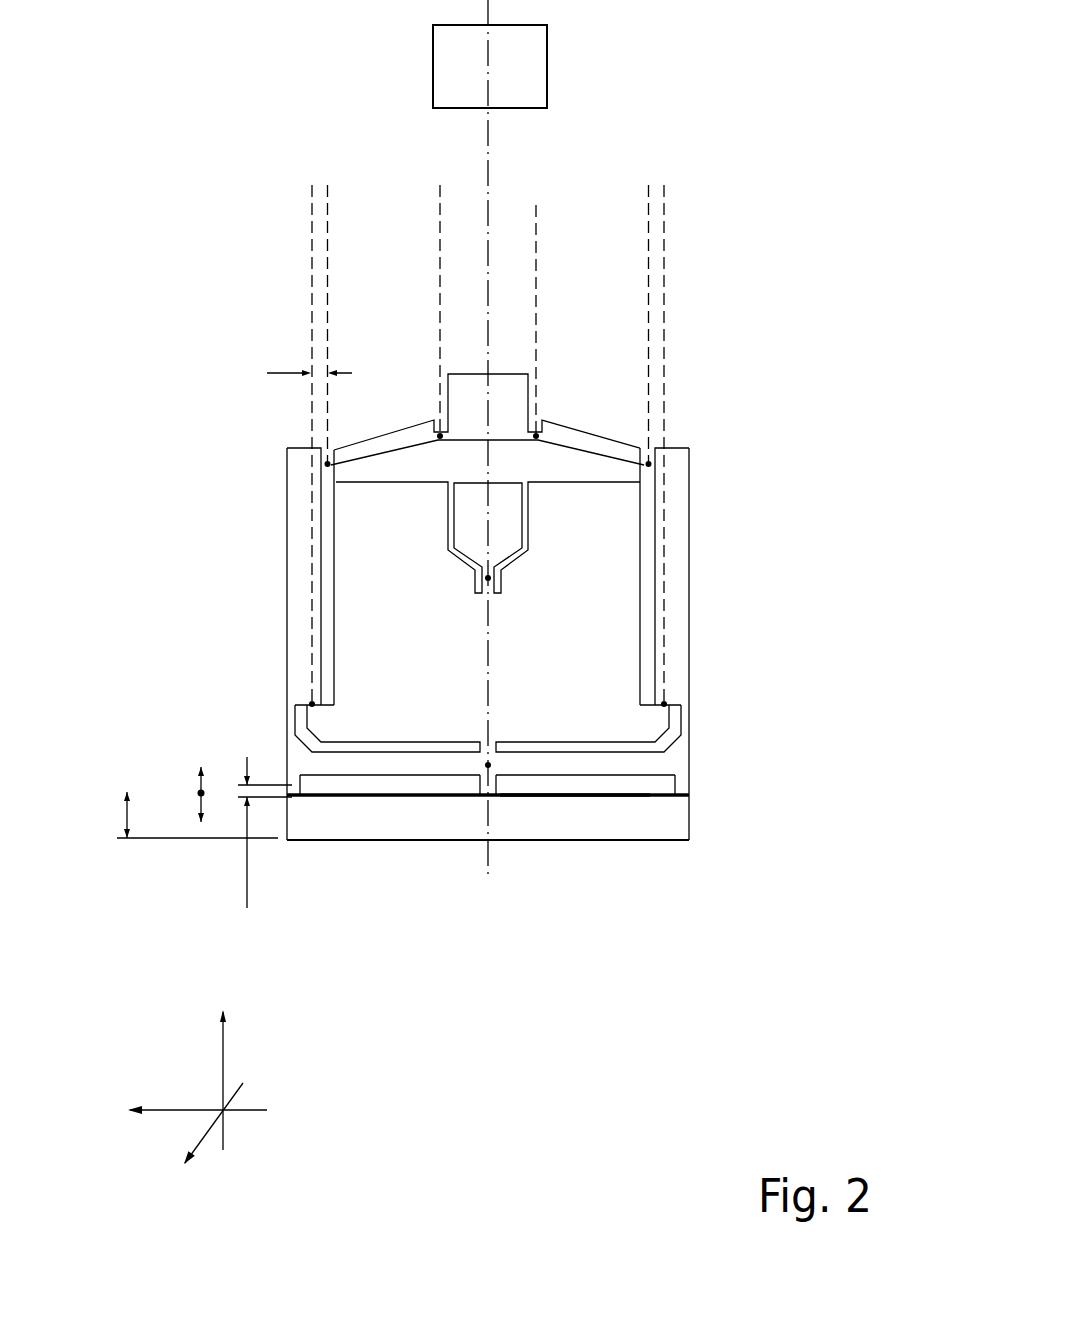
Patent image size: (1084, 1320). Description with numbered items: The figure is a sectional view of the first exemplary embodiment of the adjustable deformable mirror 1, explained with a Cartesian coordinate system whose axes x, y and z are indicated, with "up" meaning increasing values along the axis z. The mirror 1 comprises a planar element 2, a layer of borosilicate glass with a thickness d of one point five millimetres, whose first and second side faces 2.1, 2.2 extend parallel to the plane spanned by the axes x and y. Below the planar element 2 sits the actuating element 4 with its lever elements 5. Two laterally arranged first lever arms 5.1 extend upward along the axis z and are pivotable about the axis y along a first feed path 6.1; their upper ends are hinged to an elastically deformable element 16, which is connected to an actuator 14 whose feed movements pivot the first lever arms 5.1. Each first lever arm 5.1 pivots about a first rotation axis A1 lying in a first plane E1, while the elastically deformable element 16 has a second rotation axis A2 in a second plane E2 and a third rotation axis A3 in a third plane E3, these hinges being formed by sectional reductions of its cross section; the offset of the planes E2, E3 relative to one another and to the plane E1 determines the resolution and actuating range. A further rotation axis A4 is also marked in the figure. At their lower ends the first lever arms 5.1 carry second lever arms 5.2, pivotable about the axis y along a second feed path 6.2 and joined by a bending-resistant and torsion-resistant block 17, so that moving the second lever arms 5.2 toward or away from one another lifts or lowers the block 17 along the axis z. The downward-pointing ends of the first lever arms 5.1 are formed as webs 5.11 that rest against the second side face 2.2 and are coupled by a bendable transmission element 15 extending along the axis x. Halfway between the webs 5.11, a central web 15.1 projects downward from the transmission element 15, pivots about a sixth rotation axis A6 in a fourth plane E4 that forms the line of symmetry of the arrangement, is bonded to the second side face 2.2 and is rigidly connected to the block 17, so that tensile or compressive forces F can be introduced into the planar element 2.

The mirror 1 is at (193, 240).
The planar element 2 is at (680, 803).
The first side face 2.1 is at (586, 850).
The second side face 2.2 is at (600, 780).
The actuating element 4 is at (561, 516).
The block 17 is at (597, 500).
The lever elements 5 is at (127, 735).
The first lever arms 5.1 is at (673, 487).
The second lever arms 5.2 is at (680, 758).
The webs 5.11 is at (680, 783).
The first feed path 6.1 is at (286, 375).
The second feed path 6.2 is at (243, 835).
The actuator 14 is at (510, 67).
The transmission element 15 is at (524, 766).
The central web 15.1 is at (490, 778).
The elastically deformable element 16 is at (598, 445).
The first rotation axis A1 is at (312, 708).
The second rotation axis A2 is at (327, 464).
The third rotation axis A3 is at (537, 436).
The center pivot point A4 is at (488, 578).
The sixth rotation axis A6 is at (487, 768).
The first plane E1 is at (491, 444).
The second plane E2 is at (488, 324).
The third plane E3 is at (487, 310).
The fourth plane E4 is at (506, 440).
The forces F is at (202, 778).
The thickness d is at (187, 815).
The x-axis x is at (196, 1124).
The y-axis y is at (213, 1133).
The z-axis z is at (235, 1080).